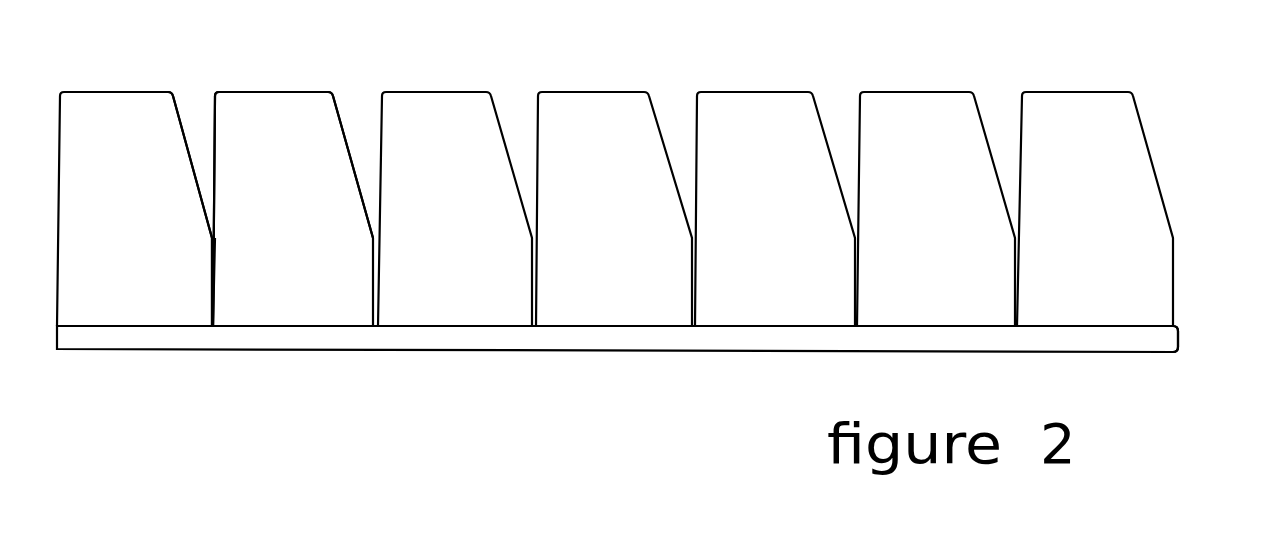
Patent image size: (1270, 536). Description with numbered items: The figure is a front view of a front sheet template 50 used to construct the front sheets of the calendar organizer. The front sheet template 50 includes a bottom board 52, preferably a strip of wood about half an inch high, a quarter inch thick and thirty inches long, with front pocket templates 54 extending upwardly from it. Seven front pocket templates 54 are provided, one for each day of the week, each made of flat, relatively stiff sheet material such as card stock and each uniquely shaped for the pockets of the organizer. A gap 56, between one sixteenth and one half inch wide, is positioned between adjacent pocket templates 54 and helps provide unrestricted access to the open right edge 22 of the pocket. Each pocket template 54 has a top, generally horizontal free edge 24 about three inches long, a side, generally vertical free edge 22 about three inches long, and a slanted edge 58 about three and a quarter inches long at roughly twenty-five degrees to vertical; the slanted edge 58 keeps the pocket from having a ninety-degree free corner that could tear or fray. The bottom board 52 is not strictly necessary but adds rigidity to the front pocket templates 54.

The open right edge 22 is at (1174, 278).
The top, generally horizontal free edge 24 is at (602, 92).
The front sheet template 50 is at (650, 219).
The bottom board 52 is at (1152, 343).
The front pocket template 54 is at (235, 112).
The gap 56 is at (213, 259).
The slanted edge 58 is at (340, 112).